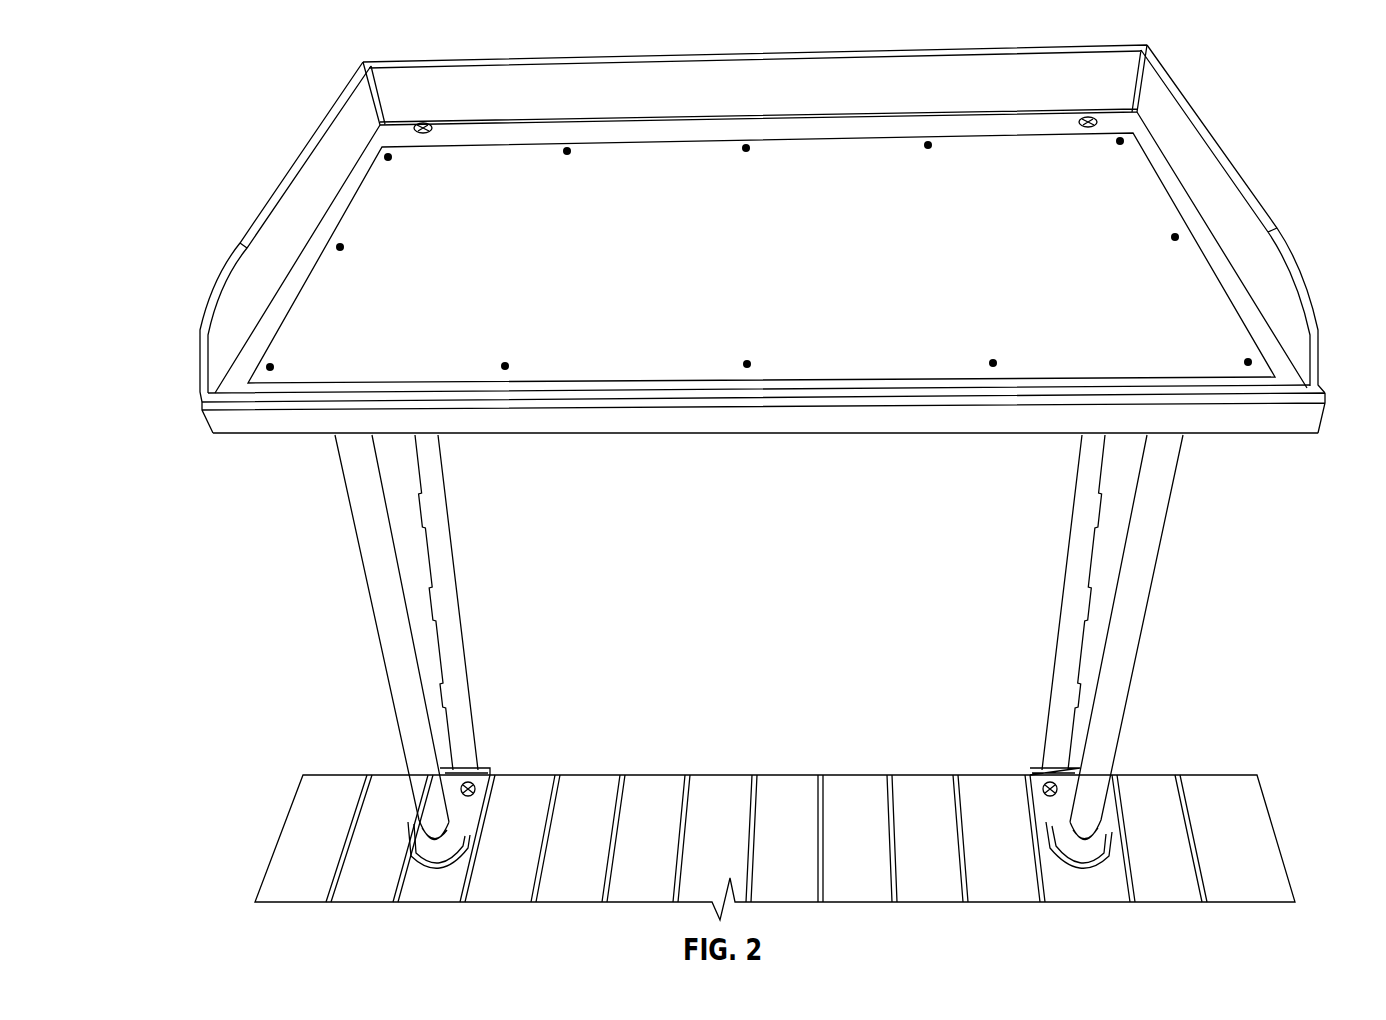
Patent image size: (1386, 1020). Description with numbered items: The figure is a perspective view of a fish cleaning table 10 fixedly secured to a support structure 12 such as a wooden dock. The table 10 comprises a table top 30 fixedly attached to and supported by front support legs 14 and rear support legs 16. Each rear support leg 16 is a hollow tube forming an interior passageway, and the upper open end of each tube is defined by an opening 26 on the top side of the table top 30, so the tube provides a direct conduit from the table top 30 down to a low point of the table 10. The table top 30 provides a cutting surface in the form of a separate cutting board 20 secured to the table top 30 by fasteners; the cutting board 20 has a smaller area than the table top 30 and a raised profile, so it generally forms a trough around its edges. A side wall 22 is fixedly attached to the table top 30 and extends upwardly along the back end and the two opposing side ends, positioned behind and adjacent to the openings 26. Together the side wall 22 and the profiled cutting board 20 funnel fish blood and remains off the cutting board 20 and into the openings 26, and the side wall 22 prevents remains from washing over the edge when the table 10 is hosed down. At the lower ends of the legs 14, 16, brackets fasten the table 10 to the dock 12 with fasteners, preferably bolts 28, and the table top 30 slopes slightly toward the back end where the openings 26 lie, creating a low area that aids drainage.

The fish cleaning table 10 is at (200, 100).
The support structure 12 is at (865, 859).
The front support legs 14 is at (393, 620).
The rear support legs 16 is at (445, 552).
The cutting board 20 is at (775, 274).
The side wall 22 is at (1256, 193).
The opening 26 is at (423, 126).
The bolts 28 is at (477, 767).
The table top 30 is at (299, 262).